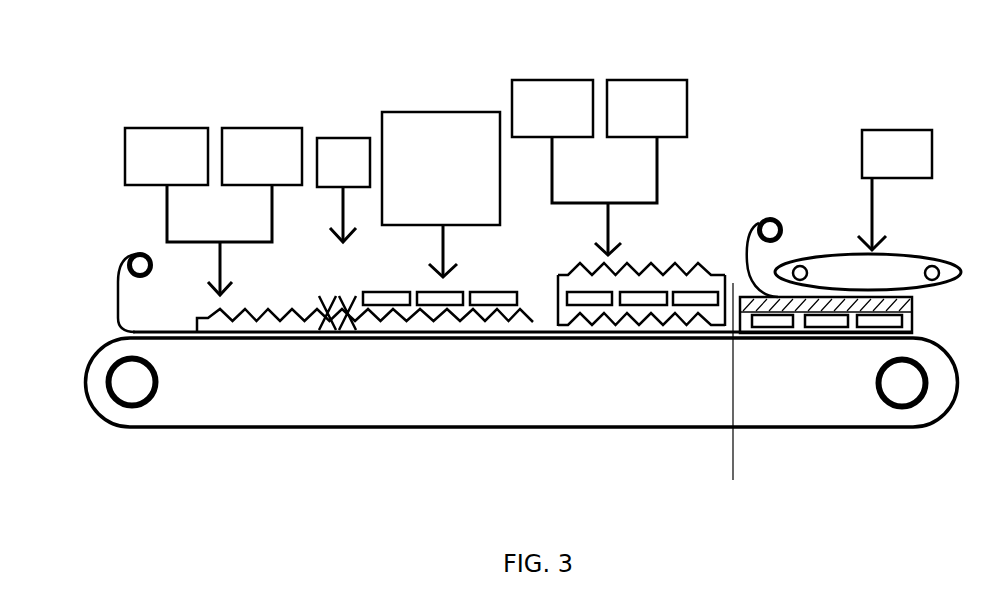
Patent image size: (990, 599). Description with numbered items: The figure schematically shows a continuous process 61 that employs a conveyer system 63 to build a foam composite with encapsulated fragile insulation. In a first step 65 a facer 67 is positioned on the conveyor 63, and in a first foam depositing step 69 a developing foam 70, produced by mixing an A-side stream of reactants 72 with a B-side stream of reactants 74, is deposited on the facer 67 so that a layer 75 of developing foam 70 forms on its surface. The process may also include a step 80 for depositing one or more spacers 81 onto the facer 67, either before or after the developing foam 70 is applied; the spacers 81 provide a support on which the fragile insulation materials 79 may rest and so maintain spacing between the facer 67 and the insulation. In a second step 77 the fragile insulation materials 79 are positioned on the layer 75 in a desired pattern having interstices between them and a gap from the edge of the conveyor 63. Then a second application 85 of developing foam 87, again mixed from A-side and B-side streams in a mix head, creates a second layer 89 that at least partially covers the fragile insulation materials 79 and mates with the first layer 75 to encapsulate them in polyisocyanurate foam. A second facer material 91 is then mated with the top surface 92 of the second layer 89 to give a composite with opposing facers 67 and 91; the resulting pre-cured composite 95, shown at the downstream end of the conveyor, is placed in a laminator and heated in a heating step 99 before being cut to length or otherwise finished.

The continuous process 61 is at (343, 503).
The conveyor system 63 is at (265, 432).
The first step 65 is at (130, 242).
The facer 67 is at (117, 280).
The first foam depositing step 69 is at (216, 156).
The developing foam 70 is at (213, 290).
The A-side stream of reactants 72 is at (152, 125).
The B-side stream of reactants 74 is at (262, 124).
The layer of developing foam 75 is at (243, 310).
The second step 77 is at (441, 176).
The fragile insulation materials 79 is at (490, 292).
The step for depositing spacers 80 is at (343, 190).
The spacers 81 is at (327, 295).
The second application of developing foam 85 is at (523, 90).
The developing foam 87 is at (641, 256).
The second layer of developing foam 89 is at (665, 273).
The second facer material 91 is at (766, 239).
The top surface 92 is at (732, 396).
The laminated insulation panel 95 is at (918, 327).
The heating step 99 is at (912, 126).